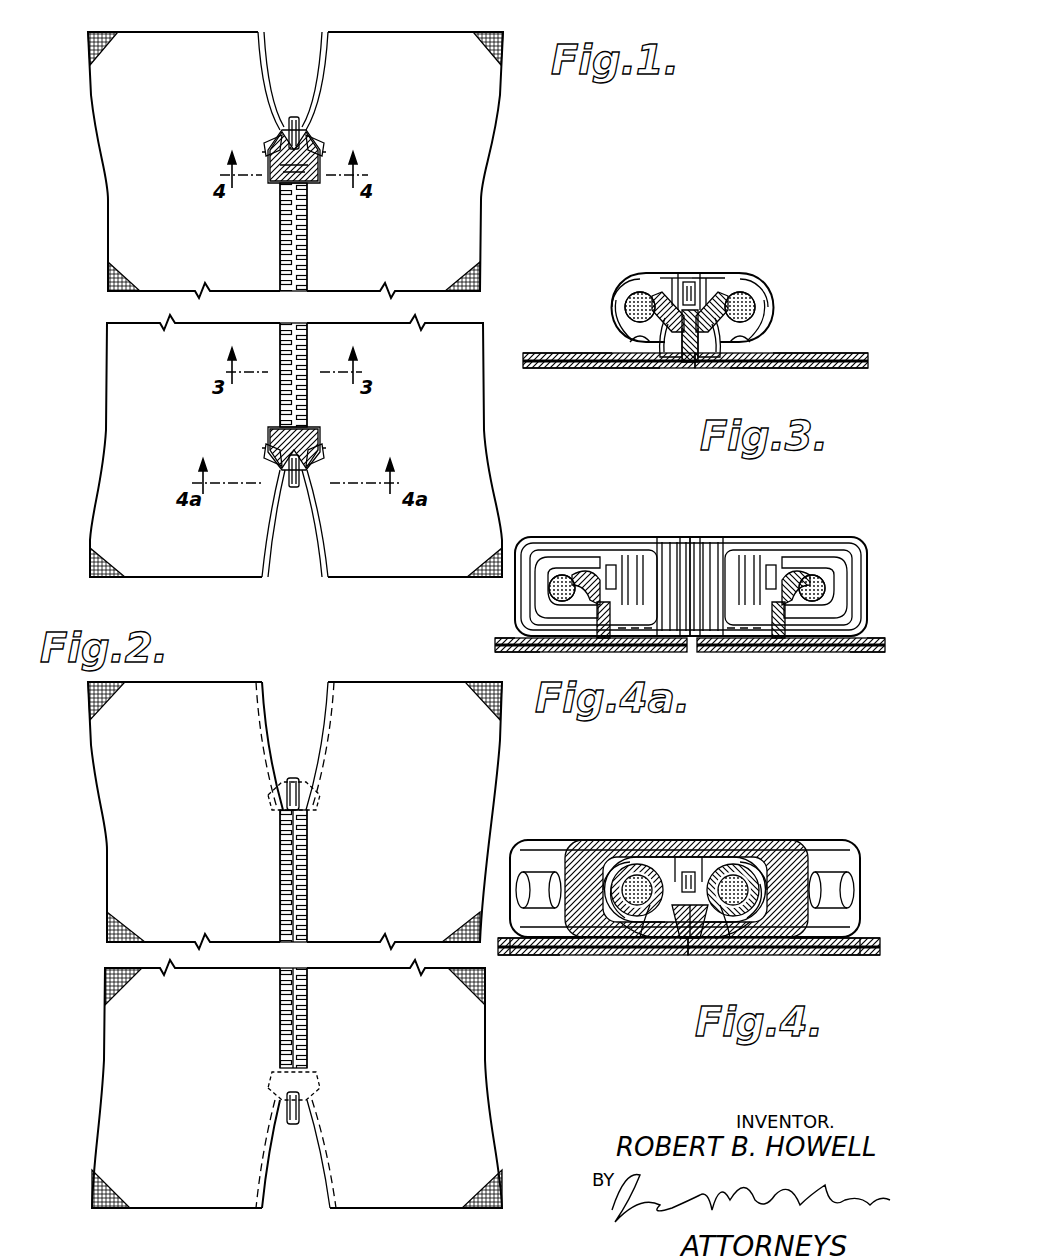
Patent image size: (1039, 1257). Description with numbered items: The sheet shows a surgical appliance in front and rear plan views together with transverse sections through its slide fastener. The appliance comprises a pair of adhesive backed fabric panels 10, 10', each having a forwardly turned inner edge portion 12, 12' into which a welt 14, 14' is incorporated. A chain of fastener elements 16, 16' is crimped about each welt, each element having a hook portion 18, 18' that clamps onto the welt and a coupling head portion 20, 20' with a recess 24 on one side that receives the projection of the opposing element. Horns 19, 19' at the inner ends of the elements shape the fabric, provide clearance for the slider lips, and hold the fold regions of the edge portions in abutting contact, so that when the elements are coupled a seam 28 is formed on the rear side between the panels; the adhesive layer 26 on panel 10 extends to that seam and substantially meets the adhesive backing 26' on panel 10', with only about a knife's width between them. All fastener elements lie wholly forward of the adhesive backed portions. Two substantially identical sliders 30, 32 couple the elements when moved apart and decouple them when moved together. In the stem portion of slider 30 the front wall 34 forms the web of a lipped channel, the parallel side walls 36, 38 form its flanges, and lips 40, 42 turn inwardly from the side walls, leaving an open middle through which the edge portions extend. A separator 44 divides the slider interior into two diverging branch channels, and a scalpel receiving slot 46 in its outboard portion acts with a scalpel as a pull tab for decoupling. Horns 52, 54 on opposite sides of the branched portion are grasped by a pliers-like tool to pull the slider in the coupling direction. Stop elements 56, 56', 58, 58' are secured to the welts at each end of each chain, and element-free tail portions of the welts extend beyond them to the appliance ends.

In FIG. 1, the adhesive backed fabric panel 10 is at (184, 304).
In FIG. 2, the adhesive backed fabric panel 10 is at (404, 815).
In FIG. 3, the adhesive backed fabric panel 10 is at (591, 337).
In FIG. 4A, the adhesive backed fabric panel 10 is at (867, 668).
In FIG. 4, the adhesive backed fabric panel 10 is at (540, 968).
In FIG. 1, the adhesive backed fabric panel 10' is at (405, 304).
In FIG. 2, the adhesive backed fabric panel 10' is at (184, 815).
In FIG. 3, the adhesive backed fabric panel 10' is at (799, 338).
In FIG. 4A, the adhesive backed fabric panel 10' is at (511, 624).
In FIG. 4, the adhesive backed fabric panel 10' is at (835, 966).
In FIG. 3, the forwardly turned inner edge portion 12 is at (631, 345).
In FIG. 4A, the forwardly turned inner edge portion 12 is at (774, 548).
In FIG. 4, the forwardly turned inner edge portion 12 is at (631, 942).
In FIG. 3, the forwardly turned inner edge portion 12' is at (745, 341).
In FIG. 4A, the forwardly turned inner edge portion 12' is at (615, 553).
In FIG. 4, the forwardly turned inner edge portion 12' is at (732, 925).
In FIG. 1, the welt 14 is at (259, 295).
In FIG. 2, the welt 14 is at (295, 945).
In FIG. 3, the welt 14 is at (612, 298).
In FIG. 4A, the welt 14 is at (830, 551).
In FIG. 4, the welt 14 is at (637, 858).
In FIG. 1, the welt 14' is at (339, 291).
In FIG. 2, the welt 14' is at (296, 934).
In FIG. 3, the welt 14' is at (757, 276).
In FIG. 4A, the welt 14' is at (565, 551).
In FIG. 4, the welt 14' is at (764, 859).
In FIG. 1, the fastener elements 16 is at (274, 289).
In FIG. 3, the fastener elements 16 is at (644, 293).
In FIG. 4A, the fastener elements 16 is at (788, 562).
In FIG. 4, the fastener elements 16 is at (648, 861).
In FIG. 1, the fastener elements 16' is at (319, 326).
In FIG. 3, the fastener elements 16' is at (758, 300).
In FIG. 4A, the fastener elements 16' is at (593, 562).
In FIG. 4, the fastener elements 16' is at (743, 851).
In FIG. 3, the hook portion 18 is at (597, 320).
In FIG. 4, the hook portion 18 is at (590, 862).
In FIG. 3, the hook portion 18' is at (784, 320).
In FIG. 4, the hook portion 18' is at (803, 861).
In FIG. 3, the horn 19 is at (661, 379).
In FIG. 4A, the horn 19 is at (761, 639).
In FIG. 4, the horn 19 is at (627, 961).
In FIG. 3, the horn 19' is at (708, 367).
In FIG. 4A, the horn 19' is at (612, 639).
In FIG. 4, the horn 19' is at (700, 965).
In FIG. 3, the coupling head portion 20 is at (672, 275).
In FIG. 4, the coupling head portion 20 is at (678, 830).
In FIG. 3, the coupling head portion 20' is at (720, 273).
In FIG. 4, the coupling head portion 20' is at (726, 840).
In FIG. 3, the recess 24 is at (692, 282).
In FIG. 4, the recess 24 is at (690, 872).
In FIG. 2, the adhesive layer 26 is at (415, 1084).
In FIG. 3, the adhesive layer 26 is at (609, 382).
In FIG. 4A, the adhesive layer 26 is at (791, 669).
In FIG. 4, the adhesive layer 26 is at (593, 964).
In FIG. 2, the adhesive backing 26' is at (172, 1084).
In FIG. 3, the adhesive backing 26' is at (781, 381).
In FIG. 4A, the adhesive backing 26' is at (591, 661).
In FIG. 4, the adhesive backing 26' is at (784, 965).
In FIG. 2, the seam 28 is at (307, 888).
In FIG. 3, the seam 28 is at (692, 366).
In FIG. 4, the seam 28 is at (690, 956).
In FIG. 1, the slider 30 is at (305, 112).
In FIG. 4, the slider 30 is at (611, 814).
In FIG. 1, the slider 32 is at (305, 500).
In FIG. 4A, the front wall 34 is at (665, 537).
In FIG. 4, the front wall 34 is at (712, 840).
In FIG. 4, the side wall 36 is at (580, 872).
In FIG. 4, the side wall 38 is at (795, 885).
In FIG. 4, the lip 40 is at (630, 955).
In FIG. 4, the lip 42 is at (733, 955).
In FIG. 2, the separator 44 is at (320, 806).
In FIG. 4A, the separator 44 is at (710, 537).
In FIG. 1, the scalpel receiving slot 46 is at (292, 117).
In FIG. 2, the scalpel receiving slot 46 is at (293, 778).
In FIG. 4A, the scalpel receiving slot 46 is at (688, 538).
In FIG. 4, the horn 52 is at (546, 908).
In FIG. 4, the horn 54 is at (832, 908).
In FIG. 1, the stop element 56 is at (254, 131).
In FIG. 1, the stop element 56' is at (337, 124).
In FIG. 1, the stop element 58 is at (253, 458).
In FIG. 1, the stop element 58' is at (339, 455).